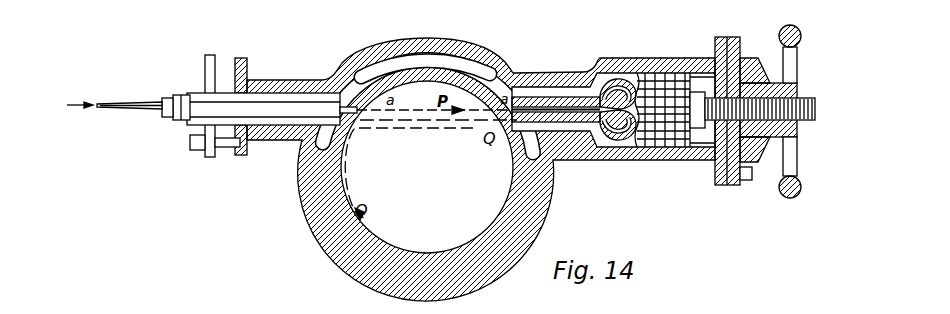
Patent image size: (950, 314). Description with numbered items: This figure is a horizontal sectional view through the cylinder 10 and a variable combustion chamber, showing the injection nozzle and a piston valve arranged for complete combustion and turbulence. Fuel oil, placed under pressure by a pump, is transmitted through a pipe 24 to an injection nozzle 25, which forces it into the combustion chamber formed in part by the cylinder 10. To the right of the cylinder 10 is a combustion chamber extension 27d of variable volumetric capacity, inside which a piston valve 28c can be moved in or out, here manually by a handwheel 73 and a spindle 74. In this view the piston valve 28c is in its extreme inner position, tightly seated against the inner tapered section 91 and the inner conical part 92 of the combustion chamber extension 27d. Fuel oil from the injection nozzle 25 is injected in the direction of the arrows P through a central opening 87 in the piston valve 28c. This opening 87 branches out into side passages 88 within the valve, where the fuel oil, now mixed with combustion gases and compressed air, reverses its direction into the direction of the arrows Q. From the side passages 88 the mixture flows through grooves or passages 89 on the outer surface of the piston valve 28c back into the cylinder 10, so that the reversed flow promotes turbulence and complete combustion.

The cylinder 10 is at (457, 248).
The pipe 24 is at (141, 111).
The injection nozzle 25 is at (274, 107).
The combustion chamber extension 27d is at (625, 147).
The piston valve 28c is at (660, 158).
The handwheel 73 is at (782, 194).
The spindle 74 is at (802, 122).
The central opening 87 is at (498, 117).
The side passages 88 is at (644, 73).
The grooves or passages 89 is at (553, 92).
The inner tapered section 91 is at (528, 92).
The inner conical part 92 is at (587, 72).